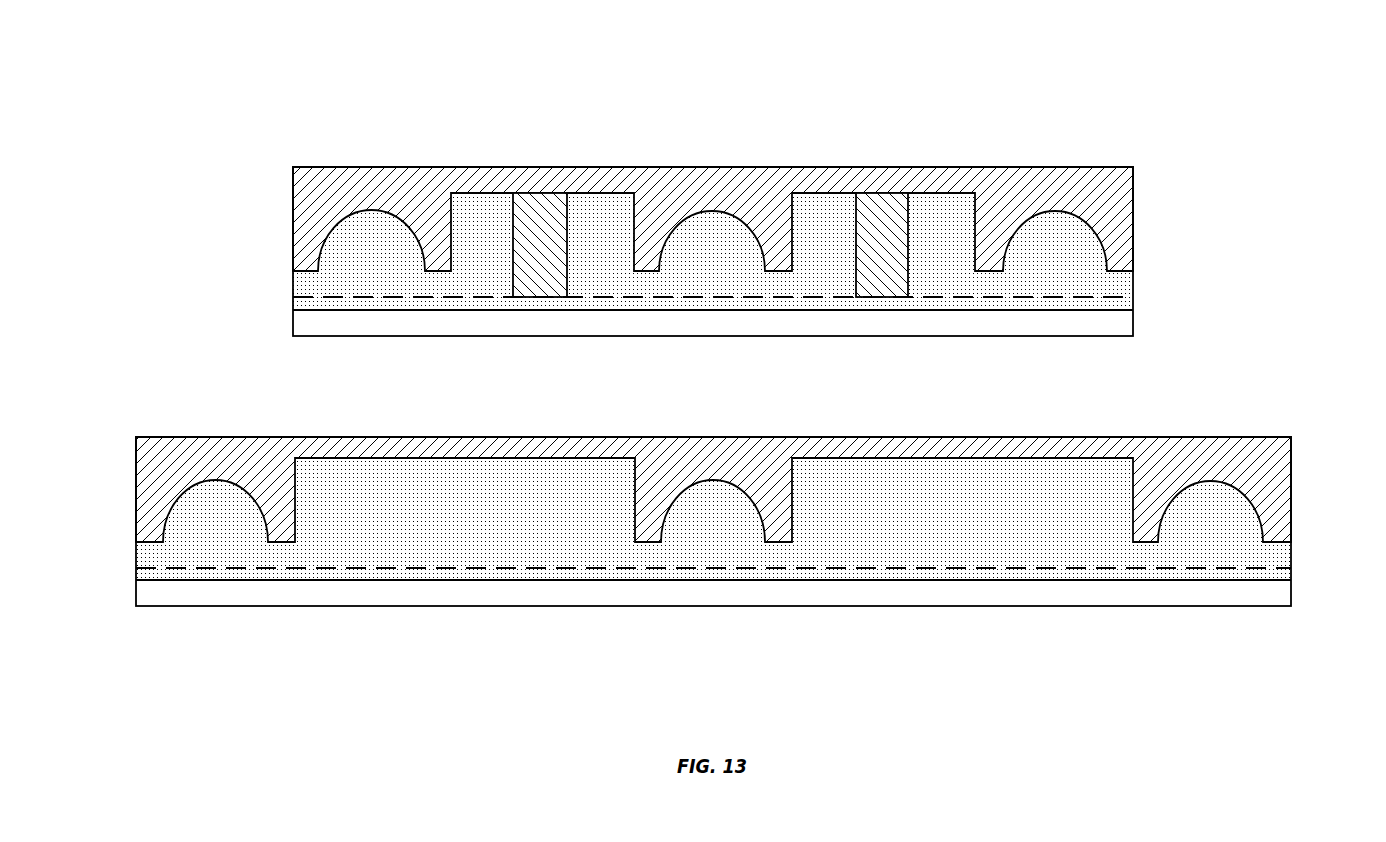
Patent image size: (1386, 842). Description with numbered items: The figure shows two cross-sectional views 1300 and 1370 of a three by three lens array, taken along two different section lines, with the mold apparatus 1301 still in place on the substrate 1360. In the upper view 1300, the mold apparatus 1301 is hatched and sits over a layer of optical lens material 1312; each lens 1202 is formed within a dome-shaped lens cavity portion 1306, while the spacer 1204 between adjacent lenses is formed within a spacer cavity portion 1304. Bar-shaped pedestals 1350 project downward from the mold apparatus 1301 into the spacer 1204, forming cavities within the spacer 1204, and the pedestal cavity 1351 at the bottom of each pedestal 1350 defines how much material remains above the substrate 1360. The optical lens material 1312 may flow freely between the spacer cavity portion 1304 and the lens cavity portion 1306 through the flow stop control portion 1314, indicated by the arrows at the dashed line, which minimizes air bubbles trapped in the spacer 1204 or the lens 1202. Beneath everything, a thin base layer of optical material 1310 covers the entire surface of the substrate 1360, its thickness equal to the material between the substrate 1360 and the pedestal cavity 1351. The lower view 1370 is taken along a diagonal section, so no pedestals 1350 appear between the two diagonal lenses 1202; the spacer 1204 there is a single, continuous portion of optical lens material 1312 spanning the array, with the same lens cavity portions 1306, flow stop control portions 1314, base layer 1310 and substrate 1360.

The cross-sectional view 1300 is at (420, 118).
The mold apparatus 1301 is at (1134, 213).
The spacer cavity portion 1304 is at (472, 189).
The lens cavity portion 1306 is at (706, 204).
The thin base layer of optical material 1310 is at (293, 298).
The optical lens material 1312 is at (1068, 285).
The flow stop control portion 1314 is at (430, 293).
The pedestal 1350 is at (537, 284).
The pedestal cavity 1351 is at (557, 297).
The substrate 1360 is at (733, 332).
The cross-sectional view 1370 is at (160, 392).
The lens 1202 is at (728, 259).
The spacer 1204 is at (502, 244).